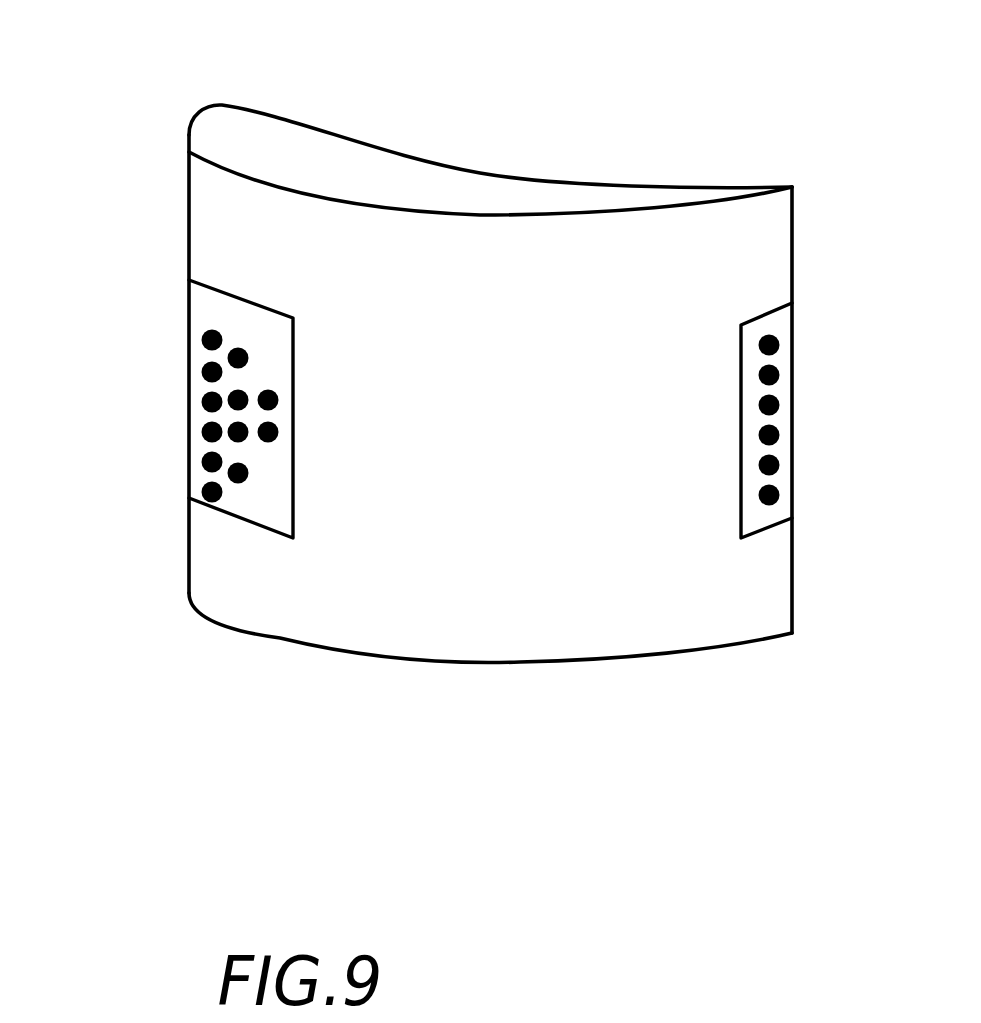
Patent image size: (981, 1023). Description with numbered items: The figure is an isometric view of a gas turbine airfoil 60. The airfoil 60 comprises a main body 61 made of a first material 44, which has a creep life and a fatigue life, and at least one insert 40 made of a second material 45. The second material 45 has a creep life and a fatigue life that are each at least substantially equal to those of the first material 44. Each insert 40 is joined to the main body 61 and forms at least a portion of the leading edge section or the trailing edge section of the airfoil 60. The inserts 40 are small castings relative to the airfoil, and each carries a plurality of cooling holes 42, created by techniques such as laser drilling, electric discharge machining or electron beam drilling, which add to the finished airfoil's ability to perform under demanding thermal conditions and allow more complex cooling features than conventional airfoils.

The gas turbine airfoil 60 is at (562, 36).
The insert 40 is at (250, 514).
The cooling holes 42 is at (205, 345).
The first material 44 is at (367, 568).
The second material 45 is at (243, 338).
The main body 61 is at (530, 445).